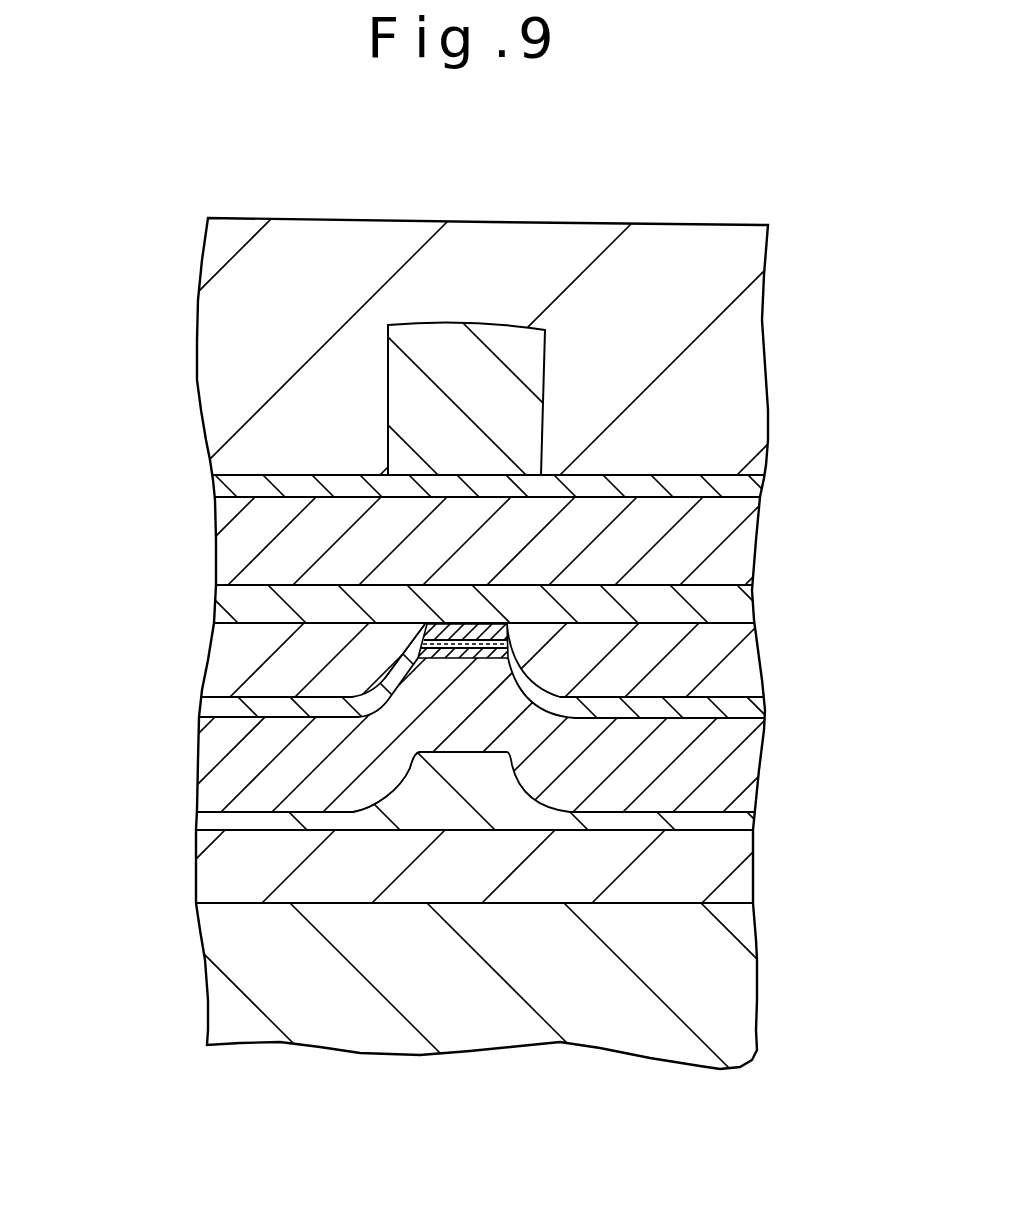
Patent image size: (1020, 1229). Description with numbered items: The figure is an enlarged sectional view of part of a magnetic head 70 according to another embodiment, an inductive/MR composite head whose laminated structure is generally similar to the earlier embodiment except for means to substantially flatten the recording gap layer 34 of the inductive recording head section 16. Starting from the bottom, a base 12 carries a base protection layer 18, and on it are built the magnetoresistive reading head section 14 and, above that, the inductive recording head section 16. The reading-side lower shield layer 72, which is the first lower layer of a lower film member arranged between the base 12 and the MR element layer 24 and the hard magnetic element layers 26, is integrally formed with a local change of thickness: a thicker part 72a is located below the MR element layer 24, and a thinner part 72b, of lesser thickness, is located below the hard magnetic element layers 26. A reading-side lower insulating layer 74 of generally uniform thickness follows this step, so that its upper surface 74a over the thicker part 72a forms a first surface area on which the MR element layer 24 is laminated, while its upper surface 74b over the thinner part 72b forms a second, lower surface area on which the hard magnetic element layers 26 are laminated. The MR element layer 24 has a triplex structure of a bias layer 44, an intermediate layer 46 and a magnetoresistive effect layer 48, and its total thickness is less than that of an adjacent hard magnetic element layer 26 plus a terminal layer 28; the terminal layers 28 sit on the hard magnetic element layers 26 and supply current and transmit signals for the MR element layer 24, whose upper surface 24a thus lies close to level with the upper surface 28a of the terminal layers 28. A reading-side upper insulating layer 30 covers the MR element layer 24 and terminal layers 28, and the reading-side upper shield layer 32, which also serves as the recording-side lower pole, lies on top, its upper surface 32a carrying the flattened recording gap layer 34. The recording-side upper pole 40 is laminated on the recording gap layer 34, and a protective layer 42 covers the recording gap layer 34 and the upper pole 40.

The base 12 is at (723, 1005).
The magnetoresistive (MR) reading head section 14 is at (127, 553).
The inductive recording head section 16 is at (138, 365).
The base protection layer 18 is at (707, 877).
The magnetoresistive (MR) element layer 24 is at (510, 614).
The upper surface of MR element layer 24a is at (470, 618).
The hard magnetic element layer 26 is at (745, 716).
The terminal layer 28 is at (740, 683).
The upper surface of terminal layer 28a is at (258, 622).
The reading-side upper insulating layer 30 is at (726, 606).
The reading-side upper shield layer / recording-side lower pole 32 is at (727, 540).
The upper surface of lower pole 32a is at (300, 497).
The recording gap layer 34 is at (737, 492).
The recording-side upper pole 40 is at (516, 433).
The protective layer 42 is at (738, 383).
The bias layer 44 is at (508, 658).
The intermediate layer 46 is at (508, 643).
The magnetoresistive effect layer 48 is at (507, 630).
The magnetic head 70 is at (478, 205).
The reading-side lower shield layer 72 is at (730, 825).
The thicker part of lower shield layer 72a is at (413, 781).
The thinner part of lower shield layer 72b is at (240, 820).
The reading-side lower insulating layer 74 is at (723, 777).
The upper surface of lower insulating layer (first area) 74a is at (407, 642).
The upper surface of lower insulating layer (second area) 74b is at (240, 712).